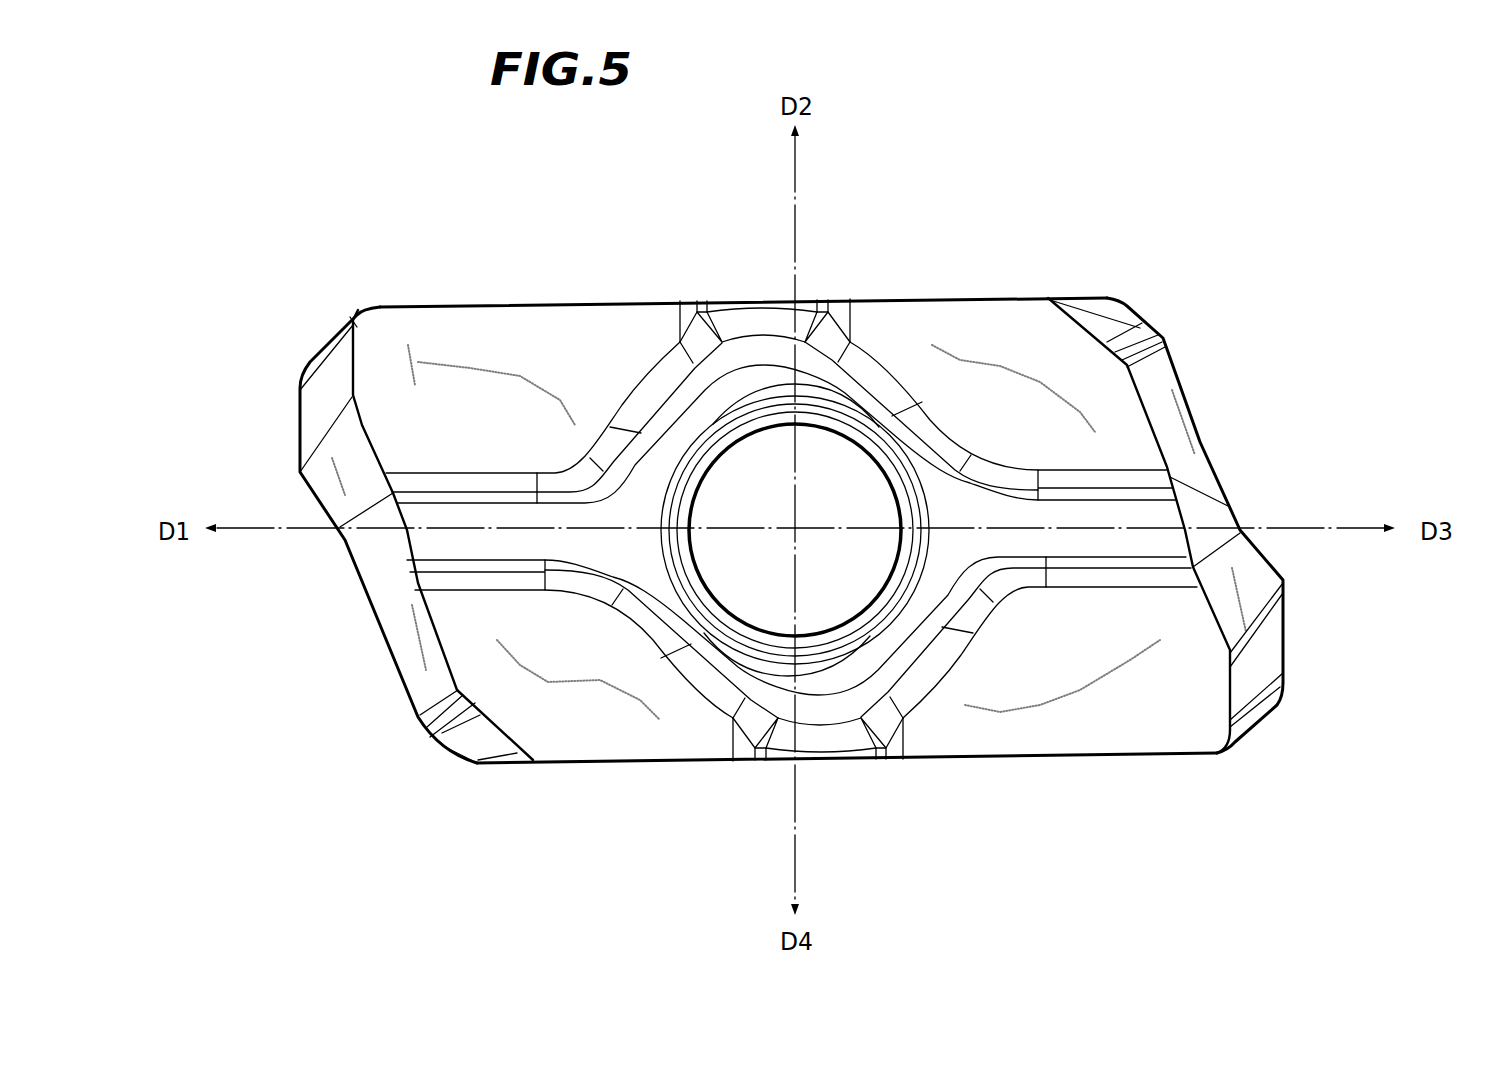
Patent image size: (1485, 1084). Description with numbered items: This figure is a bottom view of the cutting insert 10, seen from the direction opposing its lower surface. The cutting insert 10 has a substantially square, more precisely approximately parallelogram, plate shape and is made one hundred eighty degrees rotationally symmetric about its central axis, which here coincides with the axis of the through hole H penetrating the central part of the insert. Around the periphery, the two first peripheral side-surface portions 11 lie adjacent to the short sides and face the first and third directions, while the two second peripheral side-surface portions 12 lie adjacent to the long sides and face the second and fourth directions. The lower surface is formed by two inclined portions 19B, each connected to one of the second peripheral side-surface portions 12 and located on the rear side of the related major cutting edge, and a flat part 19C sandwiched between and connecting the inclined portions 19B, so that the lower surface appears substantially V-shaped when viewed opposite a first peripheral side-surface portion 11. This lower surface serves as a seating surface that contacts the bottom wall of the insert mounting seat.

The cutting insert 10 is at (246, 224).
The first peripheral side-surface portion 11 is at (1210, 414).
The second peripheral side-surface portion 12 is at (628, 284).
The inclined portion 19B is at (960, 319).
The flat part 19C is at (652, 520).
The through hole H is at (720, 596).